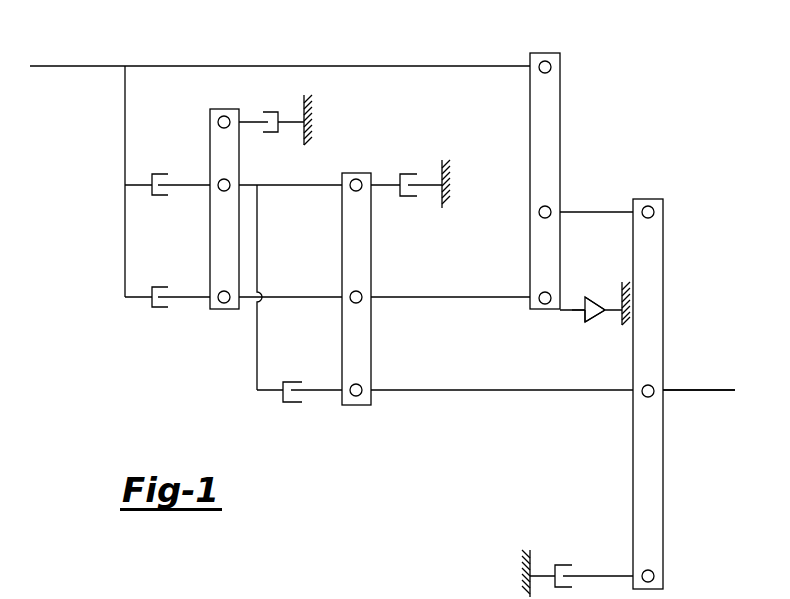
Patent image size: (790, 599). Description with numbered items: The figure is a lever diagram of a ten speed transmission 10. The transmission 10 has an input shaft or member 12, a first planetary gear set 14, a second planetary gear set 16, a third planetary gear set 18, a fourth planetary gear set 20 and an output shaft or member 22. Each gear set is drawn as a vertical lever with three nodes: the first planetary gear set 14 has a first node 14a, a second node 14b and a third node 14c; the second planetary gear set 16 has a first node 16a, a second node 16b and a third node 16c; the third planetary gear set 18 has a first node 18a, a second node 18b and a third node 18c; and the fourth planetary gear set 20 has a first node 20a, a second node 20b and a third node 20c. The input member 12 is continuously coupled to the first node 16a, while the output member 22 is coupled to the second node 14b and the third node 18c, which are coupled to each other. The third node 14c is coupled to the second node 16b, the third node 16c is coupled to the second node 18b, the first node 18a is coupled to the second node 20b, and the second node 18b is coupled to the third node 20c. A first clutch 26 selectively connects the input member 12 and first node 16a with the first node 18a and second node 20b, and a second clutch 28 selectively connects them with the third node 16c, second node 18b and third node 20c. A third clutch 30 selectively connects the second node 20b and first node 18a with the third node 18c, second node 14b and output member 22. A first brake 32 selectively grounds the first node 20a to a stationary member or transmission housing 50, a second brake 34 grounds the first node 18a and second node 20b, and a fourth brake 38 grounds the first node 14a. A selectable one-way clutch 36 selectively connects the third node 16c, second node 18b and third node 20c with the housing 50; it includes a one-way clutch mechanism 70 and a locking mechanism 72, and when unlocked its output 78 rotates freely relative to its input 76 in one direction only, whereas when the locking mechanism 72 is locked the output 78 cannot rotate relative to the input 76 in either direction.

The transmission 10 is at (670, 73).
The input shaft or member 12 is at (95, 66).
The first planetary gear set 14 is at (665, 187).
The first node of the first planetary gear set 14a is at (655, 576).
The second node of the first planetary gear set 14b is at (643, 398).
The third node of the first planetary gear set 14c is at (655, 212).
The second planetary gear set 16 is at (538, 320).
The first node of the second planetary gear set 16a is at (552, 67).
The second node of the second planetary gear set 16b is at (540, 216).
The third node of the second planetary gear set 16c is at (540, 303).
The third planetary gear set 18 is at (372, 412).
The first node of the third planetary gear set 18a is at (357, 179).
The second node of the third planetary gear set 18b is at (362, 293).
The third node of the third planetary gear set 18c is at (362, 386).
The fourth planetary gear set 20 is at (228, 318).
The first node of the fourth planetary gear set 20a is at (218, 121).
The second node of the fourth planetary gear set 20b is at (220, 191).
The third node of the fourth planetary gear set 20c is at (220, 303).
The output shaft or member 22 is at (714, 390).
The first clutch 26 is at (158, 174).
The second clutch 28 is at (157, 287).
The third clutch 30 is at (290, 382).
The first brake 32 is at (270, 112).
The second brake 34 is at (407, 174).
The selectable one-way clutch 36 is at (588, 280).
The fourth brake 38 is at (561, 565).
The stationary member or transmission housing 50 is at (620, 335).
The one-way clutch mechanism 70 is at (605, 300).
The locking mechanism 72 is at (578, 302).
The input of the one-way clutch 76 is at (607, 320).
The output of the one-way clutch 78 is at (580, 318).